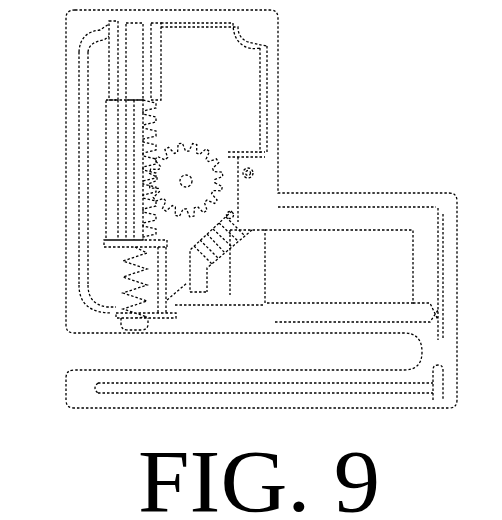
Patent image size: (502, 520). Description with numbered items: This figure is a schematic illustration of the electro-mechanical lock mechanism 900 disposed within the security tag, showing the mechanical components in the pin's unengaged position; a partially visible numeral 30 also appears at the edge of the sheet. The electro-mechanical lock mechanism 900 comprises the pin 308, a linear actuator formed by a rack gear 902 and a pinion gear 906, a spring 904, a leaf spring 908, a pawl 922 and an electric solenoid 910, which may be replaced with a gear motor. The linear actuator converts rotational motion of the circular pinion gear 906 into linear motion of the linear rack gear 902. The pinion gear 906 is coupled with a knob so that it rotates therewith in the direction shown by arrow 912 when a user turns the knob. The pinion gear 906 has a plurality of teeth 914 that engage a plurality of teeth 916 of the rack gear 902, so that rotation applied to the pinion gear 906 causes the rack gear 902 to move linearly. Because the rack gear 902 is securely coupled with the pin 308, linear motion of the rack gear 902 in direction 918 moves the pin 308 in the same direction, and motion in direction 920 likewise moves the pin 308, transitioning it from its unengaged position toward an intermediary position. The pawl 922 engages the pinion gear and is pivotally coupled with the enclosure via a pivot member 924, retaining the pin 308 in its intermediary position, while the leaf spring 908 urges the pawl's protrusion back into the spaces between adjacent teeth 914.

The pin 308 is at (128, 69).
The electro-mechanical lock mechanism 900 is at (208, 86).
The rack gear 902 is at (132, 177).
The spring 904 is at (129, 283).
The pinion gear 906 is at (204, 157).
The leaf spring 908 is at (248, 193).
The electric solenoid 910 is at (294, 267).
The direction of rotation 912 is at (166, 130).
The teeth of the pinion gear 914 is at (159, 149).
The teeth of the rack gear 916 is at (143, 208).
The direction of linear motion 918 is at (413, 105).
The direction of linear motion 920 is at (449, 106).
The pawl 922 is at (201, 287).
The pivot member 924 is at (232, 222).
The device 30 is at (490, 463).